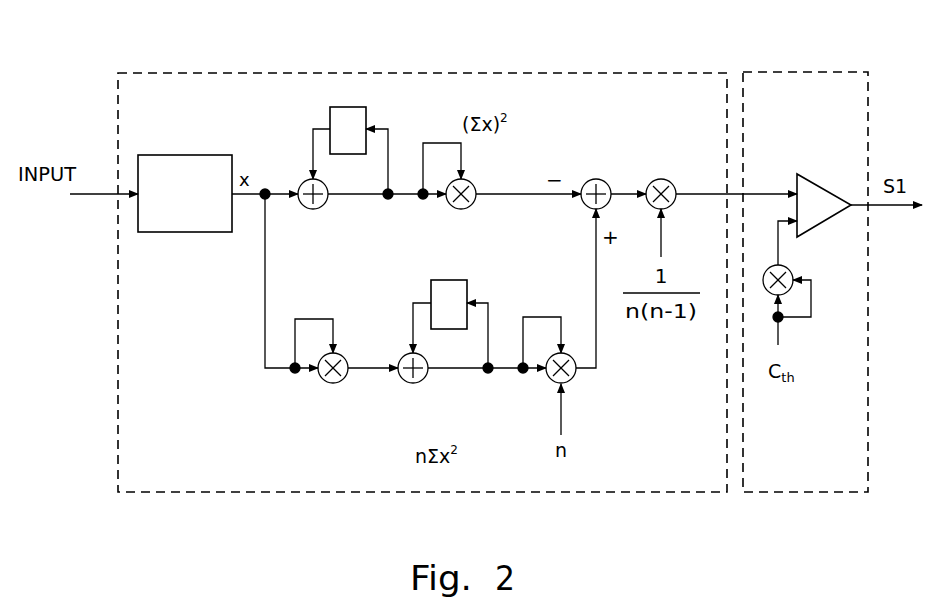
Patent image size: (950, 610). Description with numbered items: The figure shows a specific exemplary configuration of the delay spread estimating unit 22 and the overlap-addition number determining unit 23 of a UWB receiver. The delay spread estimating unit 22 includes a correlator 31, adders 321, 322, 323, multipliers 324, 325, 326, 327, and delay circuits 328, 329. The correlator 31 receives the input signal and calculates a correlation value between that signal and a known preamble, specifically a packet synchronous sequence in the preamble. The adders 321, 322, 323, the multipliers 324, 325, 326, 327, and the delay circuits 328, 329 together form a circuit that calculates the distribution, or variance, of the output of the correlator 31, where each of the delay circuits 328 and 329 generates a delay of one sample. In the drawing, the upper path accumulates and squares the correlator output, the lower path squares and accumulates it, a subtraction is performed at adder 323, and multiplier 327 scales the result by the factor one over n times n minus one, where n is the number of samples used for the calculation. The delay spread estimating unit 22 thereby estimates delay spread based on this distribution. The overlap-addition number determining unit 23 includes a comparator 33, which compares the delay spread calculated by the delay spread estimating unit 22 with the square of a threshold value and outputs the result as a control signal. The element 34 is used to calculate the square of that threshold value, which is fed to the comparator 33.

The delay spread estimating unit 22 is at (438, 72).
The overlap-addition number determining unit 23 is at (787, 72).
The correlator 31 is at (192, 155).
The adder 321 is at (322, 206).
The adder 322 is at (422, 380).
The adder 323 is at (596, 178).
The multiplier 324 is at (470, 206).
The multiplier 325 is at (342, 379).
The multiplier 326 is at (571, 379).
The multiplier 327 is at (661, 178).
The delay circuit 328 is at (368, 112).
The delay circuit 329 is at (468, 290).
The comparator 33 is at (812, 176).
The adder 34 is at (795, 270).